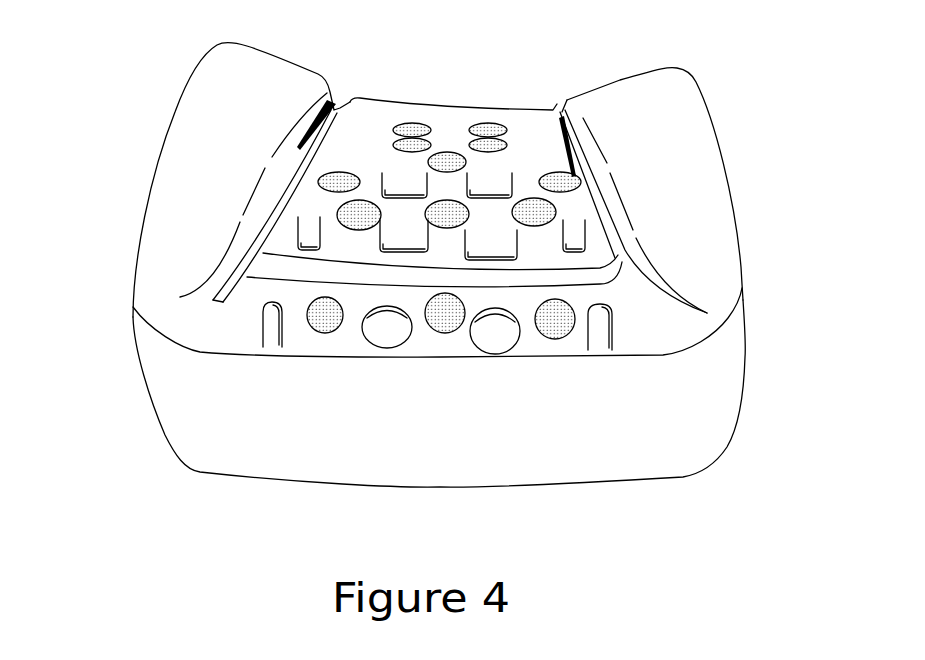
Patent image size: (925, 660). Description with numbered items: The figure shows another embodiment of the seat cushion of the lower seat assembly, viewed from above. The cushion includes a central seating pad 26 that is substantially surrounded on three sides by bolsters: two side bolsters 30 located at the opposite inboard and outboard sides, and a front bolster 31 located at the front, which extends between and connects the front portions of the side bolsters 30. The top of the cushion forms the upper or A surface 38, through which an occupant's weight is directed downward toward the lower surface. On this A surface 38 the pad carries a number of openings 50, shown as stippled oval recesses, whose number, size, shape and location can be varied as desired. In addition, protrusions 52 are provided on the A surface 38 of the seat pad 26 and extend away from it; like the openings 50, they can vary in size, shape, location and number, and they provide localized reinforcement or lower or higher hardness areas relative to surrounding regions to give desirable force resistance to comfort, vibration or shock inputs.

The central seating pad 26 is at (452, 132).
The bolsters 30 is at (202, 172).
The front bolster 31 is at (230, 330).
The upper surface 38 is at (382, 135).
The openings 50 is at (357, 215).
The protrusions 52 is at (482, 186).